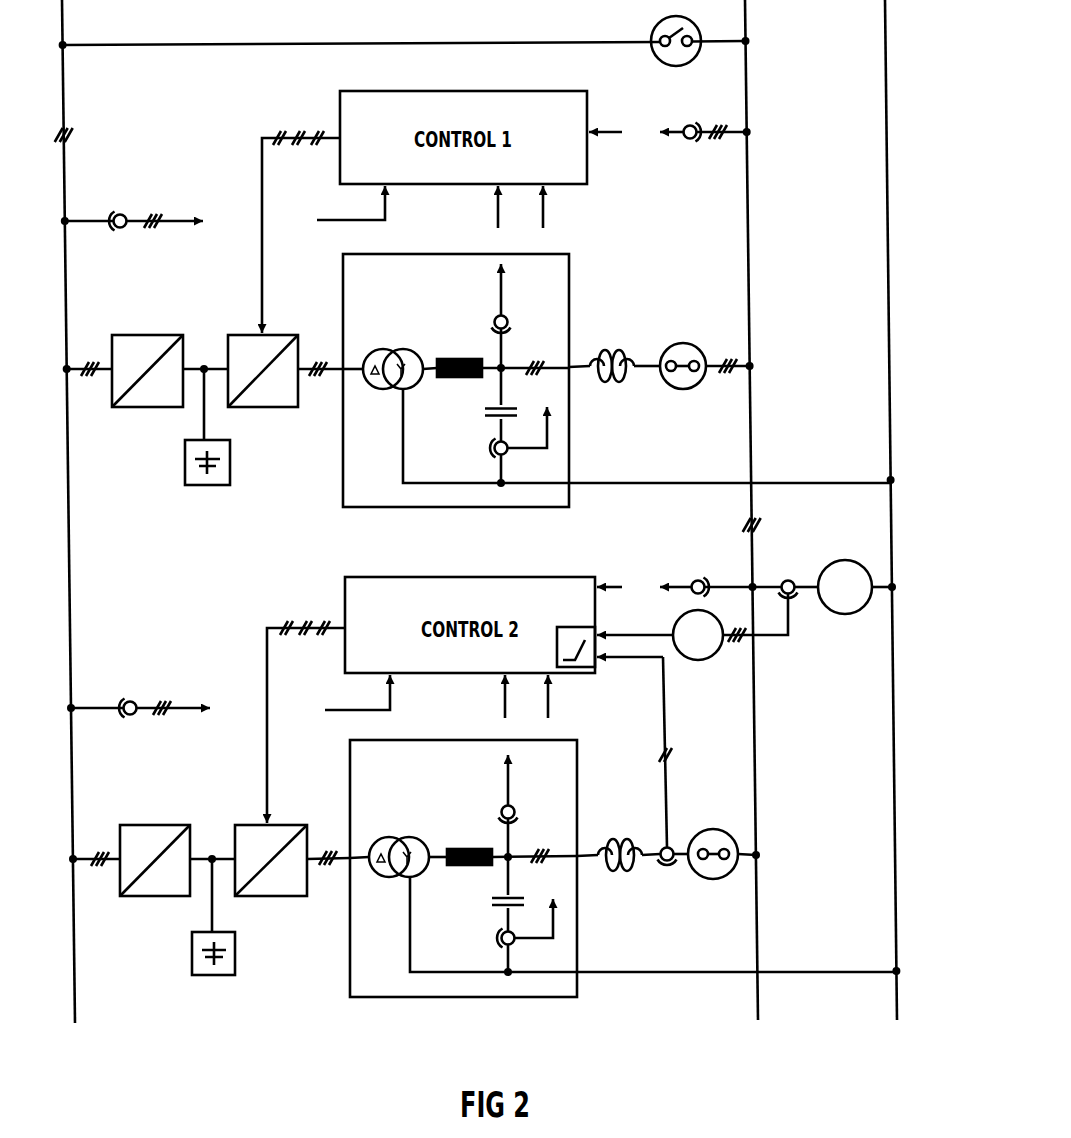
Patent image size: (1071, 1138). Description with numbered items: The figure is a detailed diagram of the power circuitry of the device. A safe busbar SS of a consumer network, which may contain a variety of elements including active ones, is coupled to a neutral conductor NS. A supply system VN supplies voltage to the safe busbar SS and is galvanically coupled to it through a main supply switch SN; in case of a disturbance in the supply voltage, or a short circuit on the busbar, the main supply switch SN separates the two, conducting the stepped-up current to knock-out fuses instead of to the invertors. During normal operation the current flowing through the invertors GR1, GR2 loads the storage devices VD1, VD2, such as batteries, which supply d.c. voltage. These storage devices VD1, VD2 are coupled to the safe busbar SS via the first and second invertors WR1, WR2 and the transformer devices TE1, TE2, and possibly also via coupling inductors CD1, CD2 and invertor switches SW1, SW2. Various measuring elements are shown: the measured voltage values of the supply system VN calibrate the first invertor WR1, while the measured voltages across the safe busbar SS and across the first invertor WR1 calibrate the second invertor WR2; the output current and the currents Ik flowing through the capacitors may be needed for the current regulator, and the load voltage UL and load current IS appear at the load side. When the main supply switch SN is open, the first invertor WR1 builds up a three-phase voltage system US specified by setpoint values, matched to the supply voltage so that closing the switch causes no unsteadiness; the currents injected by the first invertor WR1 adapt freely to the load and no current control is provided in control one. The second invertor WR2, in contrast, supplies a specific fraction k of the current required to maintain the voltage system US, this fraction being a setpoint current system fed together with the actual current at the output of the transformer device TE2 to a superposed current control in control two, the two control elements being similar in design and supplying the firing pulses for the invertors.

The main supply switch SN is at (668, 20).
The safe busbar SS is at (746, 14).
The neutral conductor NS is at (885, 12).
The supply system VN is at (69, 562).
The three-phase voltage system US is at (840, 632).
The invertor GR1 is at (154, 332).
The first invertor WR1 is at (288, 318).
The storage device VD1 is at (230, 461).
The transformer device TE1 is at (569, 262).
The capacitor current Ik is at (533, 414).
The coupling inductor CD1 is at (606, 323).
The invertor switch SW1 is at (688, 343).
The load current / generator IS is at (858, 548).
The fraction k is at (692, 627).
The invertor GR2 is at (164, 822).
The second invertor WR2 is at (297, 808).
The storage device VD2 is at (235, 952).
The transformer device TE2 is at (577, 748).
The load voltage UL is at (528, 780).
The coupling inductor CD2 is at (613, 812).
The invertor switch SW2 is at (725, 826).